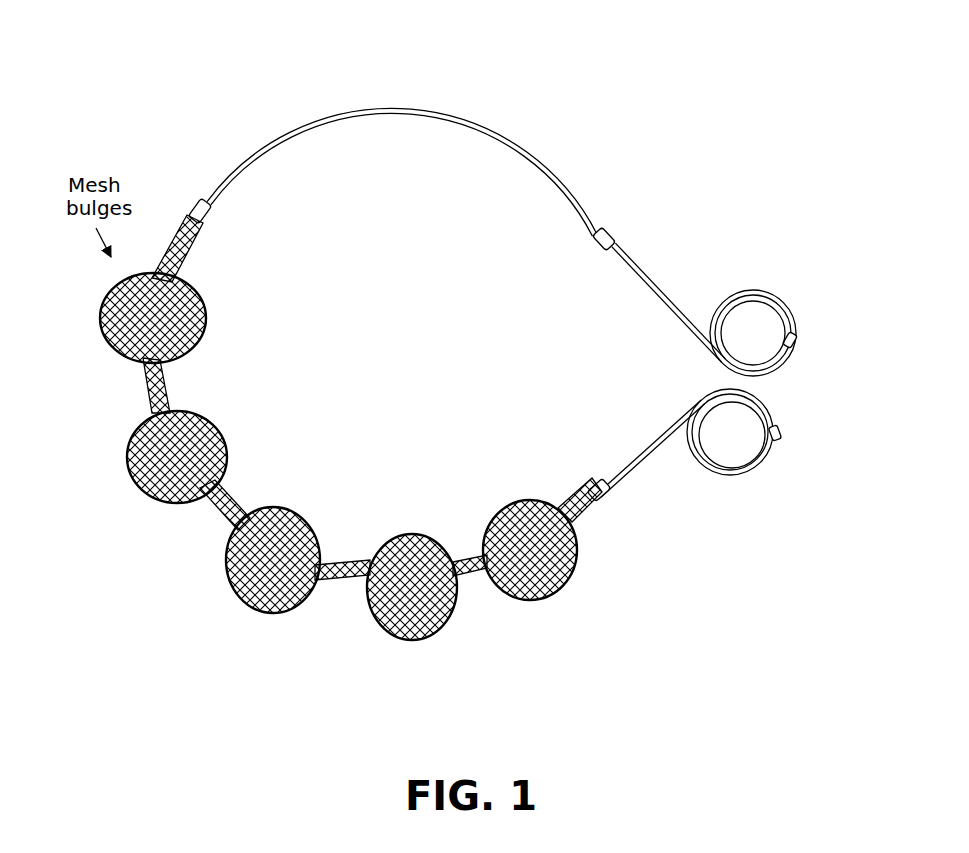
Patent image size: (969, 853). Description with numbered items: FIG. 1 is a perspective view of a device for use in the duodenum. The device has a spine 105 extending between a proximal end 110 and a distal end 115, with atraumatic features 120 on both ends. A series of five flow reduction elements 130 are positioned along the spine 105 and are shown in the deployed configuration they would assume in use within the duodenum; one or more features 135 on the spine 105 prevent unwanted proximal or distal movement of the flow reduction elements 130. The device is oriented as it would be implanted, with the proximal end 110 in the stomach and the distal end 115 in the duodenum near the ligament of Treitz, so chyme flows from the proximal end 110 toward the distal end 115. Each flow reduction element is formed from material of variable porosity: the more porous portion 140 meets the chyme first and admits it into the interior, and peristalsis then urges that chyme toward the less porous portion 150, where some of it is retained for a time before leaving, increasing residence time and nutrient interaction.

The spine 105 is at (262, 148).
The proximal end 110 is at (750, 268).
The distal end 115 is at (732, 502).
The atraumatic features 120 is at (749, 320).
The flow reduction elements 130 is at (207, 318).
The features on the spine 135 is at (603, 232).
The more porous portion of the flow reduction element 140 is at (190, 295).
The less porous portion of the flow reduction element 150 is at (210, 353).